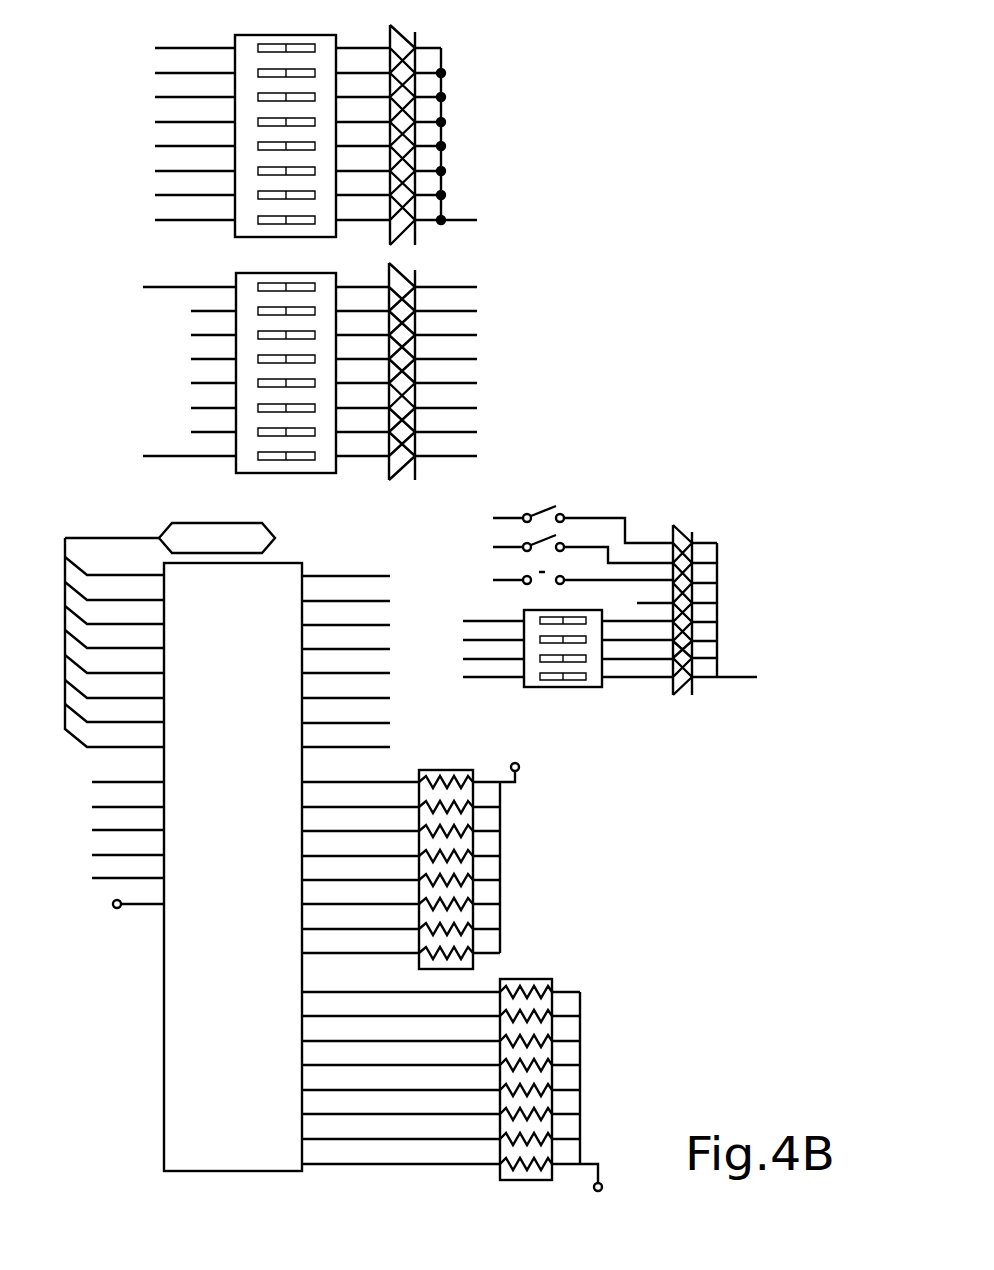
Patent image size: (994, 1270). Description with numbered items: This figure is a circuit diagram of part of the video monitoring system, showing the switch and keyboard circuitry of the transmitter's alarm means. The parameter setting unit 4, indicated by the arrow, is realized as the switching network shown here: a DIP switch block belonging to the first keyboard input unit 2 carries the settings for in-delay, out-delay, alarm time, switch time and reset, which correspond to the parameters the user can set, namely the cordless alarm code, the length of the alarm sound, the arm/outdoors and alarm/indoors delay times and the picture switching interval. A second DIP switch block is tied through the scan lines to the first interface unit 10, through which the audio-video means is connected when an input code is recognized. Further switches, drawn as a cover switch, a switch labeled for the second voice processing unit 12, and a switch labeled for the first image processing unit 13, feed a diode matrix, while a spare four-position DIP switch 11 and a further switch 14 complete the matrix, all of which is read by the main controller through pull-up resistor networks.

The parameter setting unit 4 is at (464, 609).
The first keyboard input unit 2 is at (272, 121).
The first interface unit 10 is at (266, 358).
The DIP switch SW11 (spare) 11 is at (568, 663).
The second voice processing unit 12 is at (590, 511).
The first image processing unit 13 is at (583, 536).
The switch SW14 14 is at (583, 573).